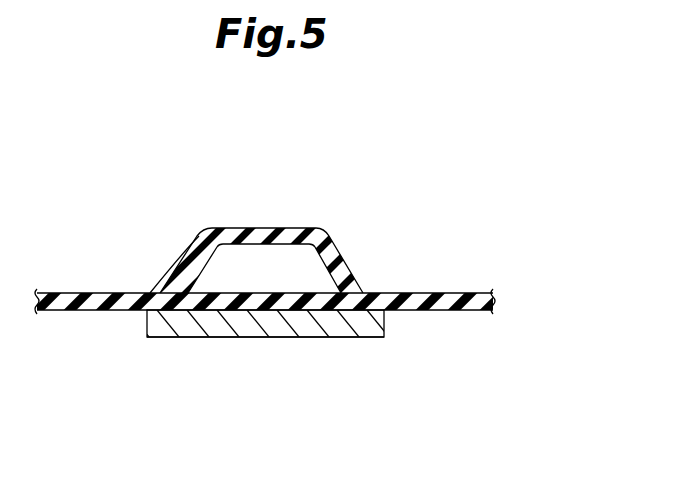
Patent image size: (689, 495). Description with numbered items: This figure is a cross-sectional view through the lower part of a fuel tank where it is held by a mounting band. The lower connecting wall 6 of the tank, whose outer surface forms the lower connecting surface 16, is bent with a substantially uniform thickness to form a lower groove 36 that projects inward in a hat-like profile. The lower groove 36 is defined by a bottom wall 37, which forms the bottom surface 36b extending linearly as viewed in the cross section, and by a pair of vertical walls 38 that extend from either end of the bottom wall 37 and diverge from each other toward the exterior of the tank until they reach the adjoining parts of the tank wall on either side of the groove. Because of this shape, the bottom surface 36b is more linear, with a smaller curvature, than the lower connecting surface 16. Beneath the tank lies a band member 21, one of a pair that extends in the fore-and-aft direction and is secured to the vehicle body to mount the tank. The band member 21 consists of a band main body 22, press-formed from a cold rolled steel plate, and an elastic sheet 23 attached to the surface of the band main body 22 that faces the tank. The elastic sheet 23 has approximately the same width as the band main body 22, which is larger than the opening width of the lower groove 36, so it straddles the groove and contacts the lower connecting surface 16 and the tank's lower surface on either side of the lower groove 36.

The lower connecting surface 16 is at (92, 311).
The lower connecting wall 6 is at (448, 311).
The band main body 22 is at (185, 337).
The elastic sheet 23 is at (303, 317).
The band member 21 is at (256, 338).
The lower groove 36 is at (280, 281).
The bottom surface 36b is at (232, 240).
The bottom wall 37 is at (277, 229).
The vertical walls 38 is at (192, 257).